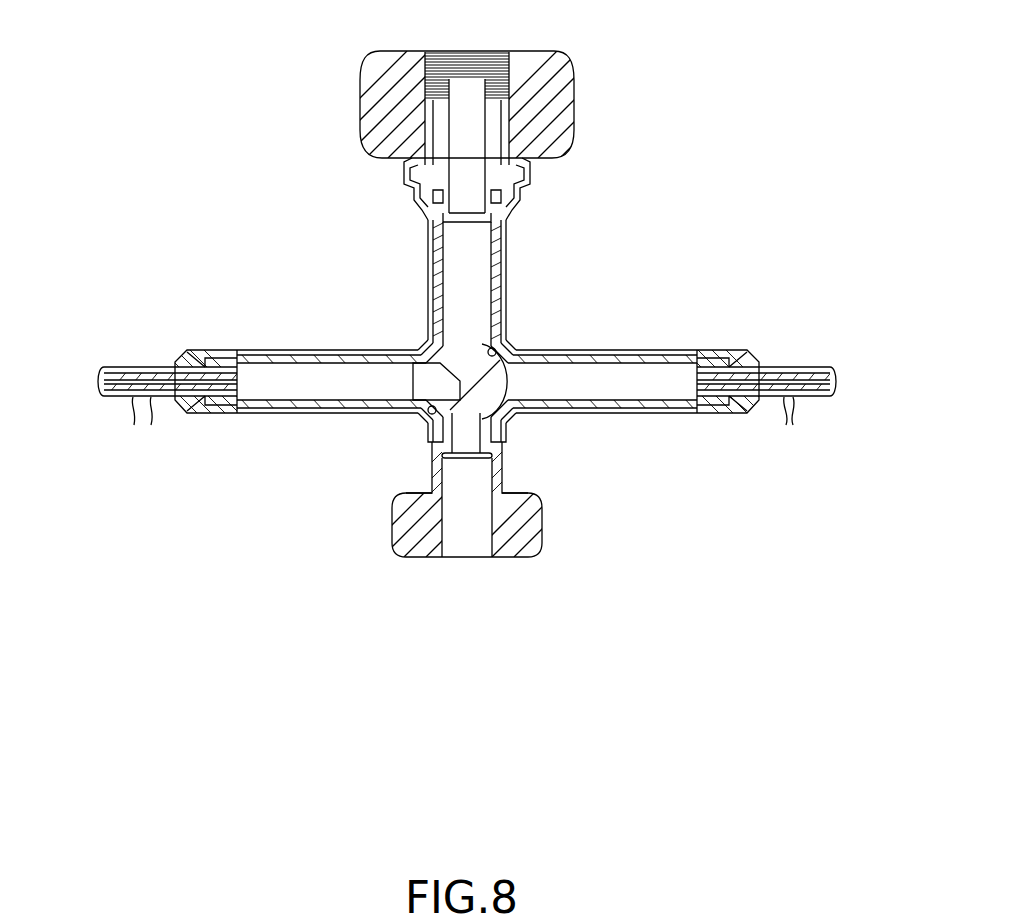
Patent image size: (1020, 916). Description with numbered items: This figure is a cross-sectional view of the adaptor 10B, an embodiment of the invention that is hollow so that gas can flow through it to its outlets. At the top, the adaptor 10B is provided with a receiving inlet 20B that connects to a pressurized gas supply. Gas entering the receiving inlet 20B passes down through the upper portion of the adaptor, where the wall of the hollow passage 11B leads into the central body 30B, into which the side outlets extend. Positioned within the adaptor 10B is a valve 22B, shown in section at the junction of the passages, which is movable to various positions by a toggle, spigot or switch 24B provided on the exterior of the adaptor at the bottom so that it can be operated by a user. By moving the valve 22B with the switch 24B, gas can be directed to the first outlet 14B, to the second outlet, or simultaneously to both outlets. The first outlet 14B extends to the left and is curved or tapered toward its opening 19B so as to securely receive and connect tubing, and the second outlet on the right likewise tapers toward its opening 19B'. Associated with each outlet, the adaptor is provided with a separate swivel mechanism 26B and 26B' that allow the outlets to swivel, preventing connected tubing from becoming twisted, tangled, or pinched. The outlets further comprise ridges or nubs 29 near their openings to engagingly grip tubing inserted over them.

The adaptor 10B is at (308, 110).
The receiving inlet 20B is at (547, 62).
The valve body 30B is at (520, 253).
The vertical body tube 11B is at (432, 326).
The valve 22B is at (506, 357).
The swivel mechanism 26B is at (515, 352).
The swivel mechanism 26B' is at (726, 353).
The first outlet 14B is at (103, 368).
The opening 19B is at (129, 395).
The opening 19B' is at (801, 397).
The ridges or nubs 29 is at (466, 426).
The switch 24B is at (468, 562).